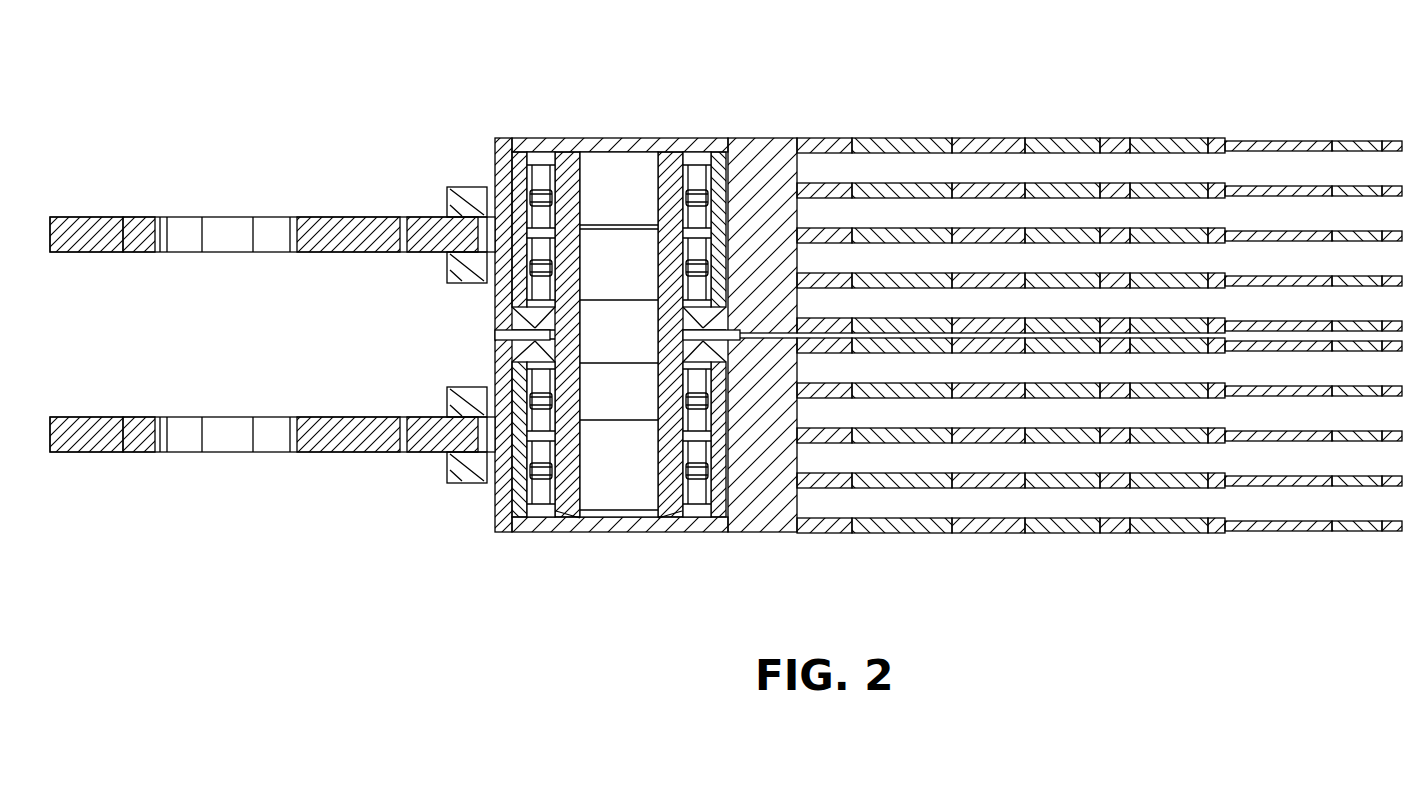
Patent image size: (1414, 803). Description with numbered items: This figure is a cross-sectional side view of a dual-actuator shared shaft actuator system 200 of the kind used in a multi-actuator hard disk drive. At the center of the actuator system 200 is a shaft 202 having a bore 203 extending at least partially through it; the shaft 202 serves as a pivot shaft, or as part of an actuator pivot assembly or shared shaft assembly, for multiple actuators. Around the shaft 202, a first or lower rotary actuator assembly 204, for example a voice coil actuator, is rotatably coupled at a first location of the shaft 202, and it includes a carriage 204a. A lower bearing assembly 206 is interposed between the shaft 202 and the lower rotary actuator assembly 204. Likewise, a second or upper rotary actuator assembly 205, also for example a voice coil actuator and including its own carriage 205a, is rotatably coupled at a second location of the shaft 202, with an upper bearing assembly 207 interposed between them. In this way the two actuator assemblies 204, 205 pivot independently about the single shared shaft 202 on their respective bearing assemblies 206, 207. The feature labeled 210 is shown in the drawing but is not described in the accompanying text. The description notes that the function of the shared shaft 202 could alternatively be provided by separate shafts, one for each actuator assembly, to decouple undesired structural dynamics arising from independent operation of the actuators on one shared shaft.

The actuator system 200 is at (726, 314).
The shaft 202 is at (571, 150).
The bore 203 is at (619, 182).
The lower rotary actuator assembly 204 is at (371, 442).
The carriage 204a is at (777, 522).
The upper rotary actuator assembly 205 is at (373, 230).
The carriage 205a is at (766, 175).
The lower bearing assembly 206 is at (690, 515).
The upper bearing assembly 207 is at (693, 179).
The slot 210 is at (548, 338).